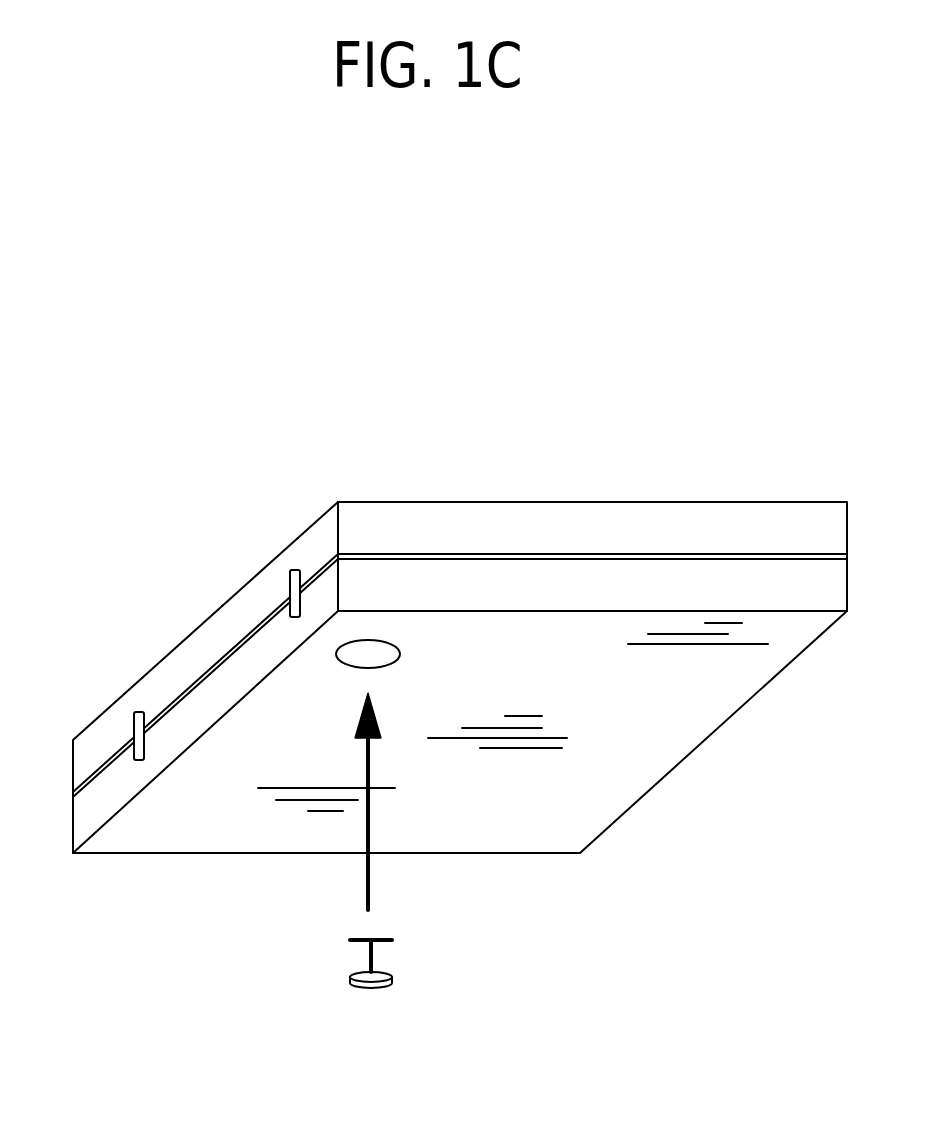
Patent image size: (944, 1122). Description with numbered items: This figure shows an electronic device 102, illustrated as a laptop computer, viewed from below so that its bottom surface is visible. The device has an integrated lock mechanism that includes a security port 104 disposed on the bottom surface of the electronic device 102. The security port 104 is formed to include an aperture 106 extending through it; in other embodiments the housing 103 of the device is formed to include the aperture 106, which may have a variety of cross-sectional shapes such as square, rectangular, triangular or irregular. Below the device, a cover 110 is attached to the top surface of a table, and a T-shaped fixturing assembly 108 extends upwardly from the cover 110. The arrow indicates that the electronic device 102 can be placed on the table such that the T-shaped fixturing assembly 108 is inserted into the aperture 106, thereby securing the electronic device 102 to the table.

The electronic device 102 is at (460, 585).
The housing 103 is at (423, 542).
The security port 104 is at (338, 663).
The aperture 106 is at (380, 653).
The T-shaped fixturing assembly 108 is at (350, 940).
The cover 110 is at (393, 982).